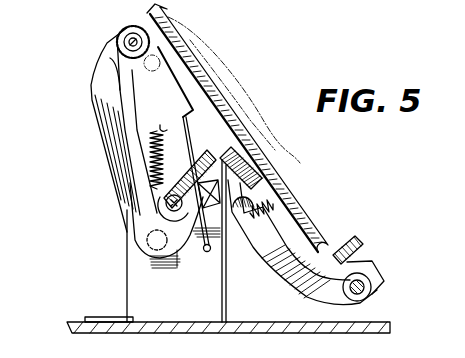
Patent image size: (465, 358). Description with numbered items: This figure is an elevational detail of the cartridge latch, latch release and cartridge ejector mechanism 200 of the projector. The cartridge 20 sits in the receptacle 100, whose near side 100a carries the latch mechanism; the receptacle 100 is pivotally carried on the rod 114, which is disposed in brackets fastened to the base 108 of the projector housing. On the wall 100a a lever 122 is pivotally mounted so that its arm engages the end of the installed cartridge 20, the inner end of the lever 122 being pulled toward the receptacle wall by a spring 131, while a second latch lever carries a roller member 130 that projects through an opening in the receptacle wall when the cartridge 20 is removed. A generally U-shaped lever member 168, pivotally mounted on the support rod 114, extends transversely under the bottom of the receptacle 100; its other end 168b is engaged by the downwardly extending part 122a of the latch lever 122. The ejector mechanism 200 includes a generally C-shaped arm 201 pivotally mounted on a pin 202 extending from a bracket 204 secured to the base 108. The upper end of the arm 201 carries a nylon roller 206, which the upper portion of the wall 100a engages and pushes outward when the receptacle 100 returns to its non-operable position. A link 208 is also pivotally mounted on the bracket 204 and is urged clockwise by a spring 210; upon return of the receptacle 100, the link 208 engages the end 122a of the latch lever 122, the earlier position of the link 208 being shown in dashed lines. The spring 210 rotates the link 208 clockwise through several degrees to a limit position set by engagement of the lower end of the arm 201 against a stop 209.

The cartridge 20 is at (312, 188).
The receptacle 100 is at (233, 127).
The near side of the receptacle 100a is at (197, 81).
The base 108 is at (268, 323).
The rod 114 is at (369, 290).
The lever 122 is at (174, 269).
The downwardly extending part of the latch lever 122a is at (222, 243).
The roller member 130 is at (250, 132).
The spring 131 is at (263, 150).
The U-shaped lever member 168 is at (287, 245).
The other end of the lever member 168b is at (260, 232).
The cartridge ejector mechanism 200 is at (112, 162).
The C-shaped arm 201 is at (91, 90).
The pin 202 is at (147, 239).
The bracket 204 is at (128, 287).
The nylon roller 206 is at (128, 24).
The link 208 is at (186, 185).
The stop 209 is at (205, 252).
The spring 210 is at (166, 145).